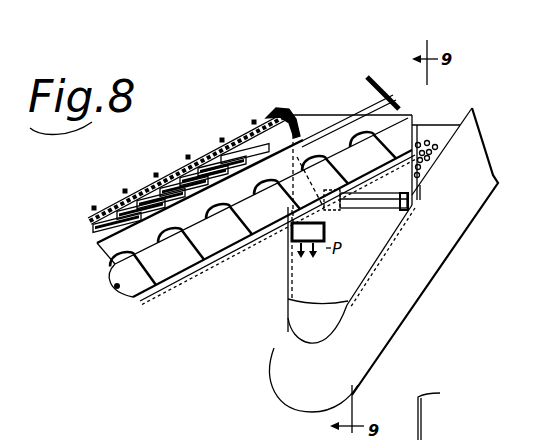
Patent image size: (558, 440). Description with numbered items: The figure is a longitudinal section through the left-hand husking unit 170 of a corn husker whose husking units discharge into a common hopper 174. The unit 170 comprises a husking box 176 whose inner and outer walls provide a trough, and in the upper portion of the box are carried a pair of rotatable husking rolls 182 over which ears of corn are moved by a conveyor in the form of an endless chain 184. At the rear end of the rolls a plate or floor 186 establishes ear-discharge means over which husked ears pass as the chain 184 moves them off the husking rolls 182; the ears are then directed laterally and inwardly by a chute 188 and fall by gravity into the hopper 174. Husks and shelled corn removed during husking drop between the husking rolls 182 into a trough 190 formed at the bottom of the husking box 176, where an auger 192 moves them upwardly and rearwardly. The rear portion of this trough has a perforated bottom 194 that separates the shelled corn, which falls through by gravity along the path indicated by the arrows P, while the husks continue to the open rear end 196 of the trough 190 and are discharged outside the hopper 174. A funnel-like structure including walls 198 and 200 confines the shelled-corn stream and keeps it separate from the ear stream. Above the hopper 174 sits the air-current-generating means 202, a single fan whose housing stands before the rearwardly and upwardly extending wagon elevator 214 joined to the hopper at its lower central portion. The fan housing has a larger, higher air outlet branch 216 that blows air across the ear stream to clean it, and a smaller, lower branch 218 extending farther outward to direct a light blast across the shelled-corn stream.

The left-hand husking unit 170 is at (100, 262).
The hopper 174 is at (285, 313).
The husking box 176 is at (95, 240).
The husking rolls 182 is at (102, 243).
The endless chain 184 is at (226, 143).
The plate or floor 186 is at (291, 112).
The chute 188 is at (367, 78).
The trough 190 is at (143, 298).
The auger 192 is at (110, 276).
The perforated bottom 194 is at (348, 186).
The open rear end of trough 196 is at (414, 121).
The wall 198 is at (333, 214).
The wall 200 is at (292, 230).
The air-current-generating means 202 is at (327, 116).
The wagon elevator 214 is at (469, 226).
The air outlet branch 216 is at (410, 204).
The air outlet branch 218 is at (293, 247).